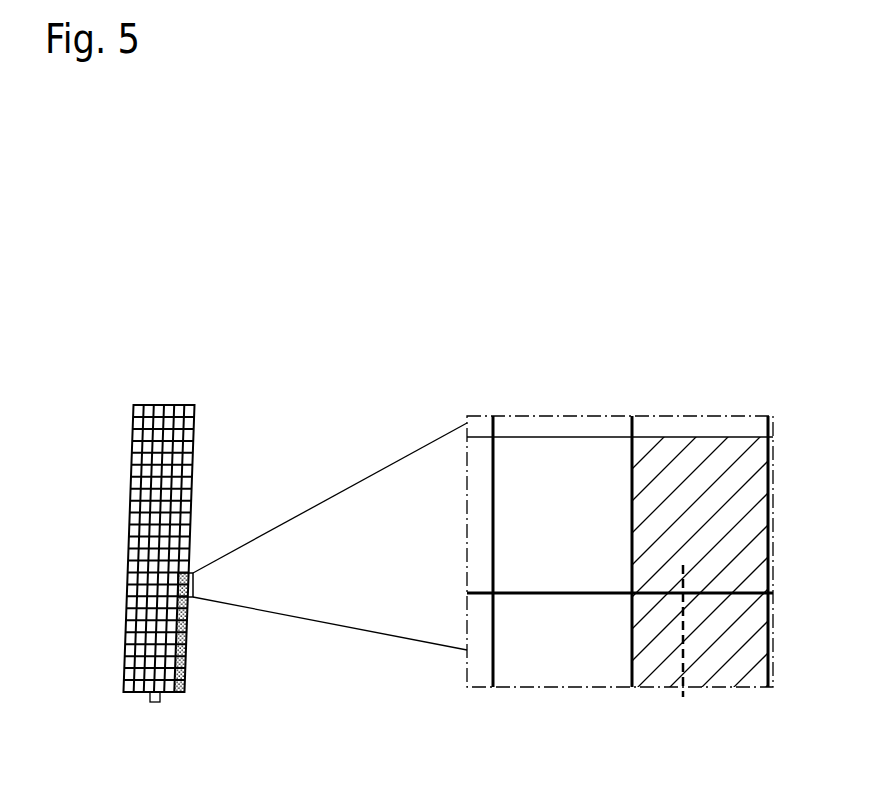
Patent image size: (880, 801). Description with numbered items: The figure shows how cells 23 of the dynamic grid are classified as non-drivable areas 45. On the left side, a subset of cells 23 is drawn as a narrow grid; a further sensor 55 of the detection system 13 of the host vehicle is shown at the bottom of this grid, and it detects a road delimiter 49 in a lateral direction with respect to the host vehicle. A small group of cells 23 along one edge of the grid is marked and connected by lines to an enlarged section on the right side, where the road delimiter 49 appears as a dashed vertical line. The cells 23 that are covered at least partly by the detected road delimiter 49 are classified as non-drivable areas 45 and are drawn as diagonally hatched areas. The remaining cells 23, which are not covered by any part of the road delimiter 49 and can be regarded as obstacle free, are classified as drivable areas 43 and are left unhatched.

The detection system 13 is at (180, 720).
The cells 23 is at (232, 416).
The drivable areas 43 is at (142, 515).
The non-drivable areas 45 is at (185, 628).
The road delimiter 49 is at (683, 657).
The further sensor 55 is at (150, 702).